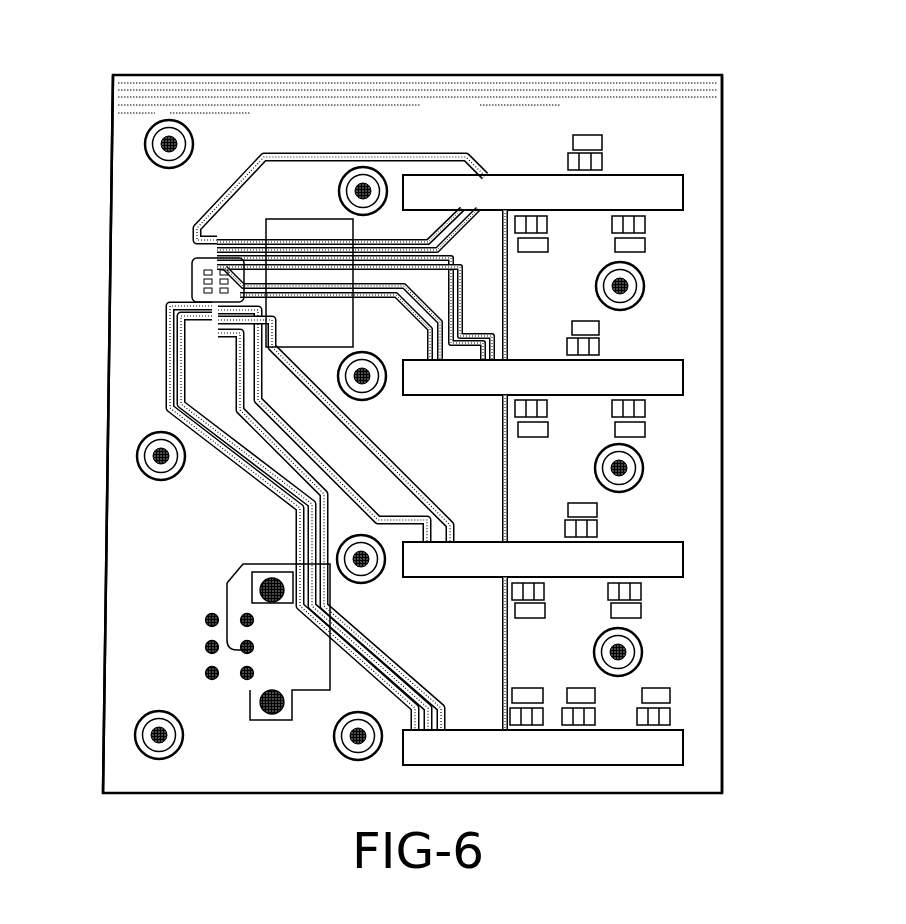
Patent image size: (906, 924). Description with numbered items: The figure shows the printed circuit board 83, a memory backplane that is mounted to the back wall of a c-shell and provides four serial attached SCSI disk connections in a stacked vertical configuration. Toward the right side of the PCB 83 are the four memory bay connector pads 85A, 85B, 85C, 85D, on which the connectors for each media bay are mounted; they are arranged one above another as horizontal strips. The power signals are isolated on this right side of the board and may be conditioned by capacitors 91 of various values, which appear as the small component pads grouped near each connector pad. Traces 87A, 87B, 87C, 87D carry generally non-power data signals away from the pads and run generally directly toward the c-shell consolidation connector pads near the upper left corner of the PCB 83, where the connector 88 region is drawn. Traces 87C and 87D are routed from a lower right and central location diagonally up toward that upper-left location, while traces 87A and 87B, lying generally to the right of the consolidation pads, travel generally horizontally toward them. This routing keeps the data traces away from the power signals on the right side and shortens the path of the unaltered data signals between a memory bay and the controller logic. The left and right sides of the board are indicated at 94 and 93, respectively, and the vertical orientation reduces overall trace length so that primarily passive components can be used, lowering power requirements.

The printed circuit board 83 is at (501, 68).
The memory bay connector pad 85A is at (538, 180).
The memory bay connector pad 85B is at (538, 367).
The memory bay connector pad 85C is at (538, 553).
The memory bay connector pad 85D is at (478, 735).
The trace 87A is at (212, 207).
The trace 87B is at (398, 295).
The trace 87C is at (388, 447).
The trace 87D is at (313, 617).
The connector 88 is at (182, 269).
The capacitor 91 is at (602, 143).
The right edge of board 93 is at (732, 612).
The left edge of board 94 is at (92, 612).